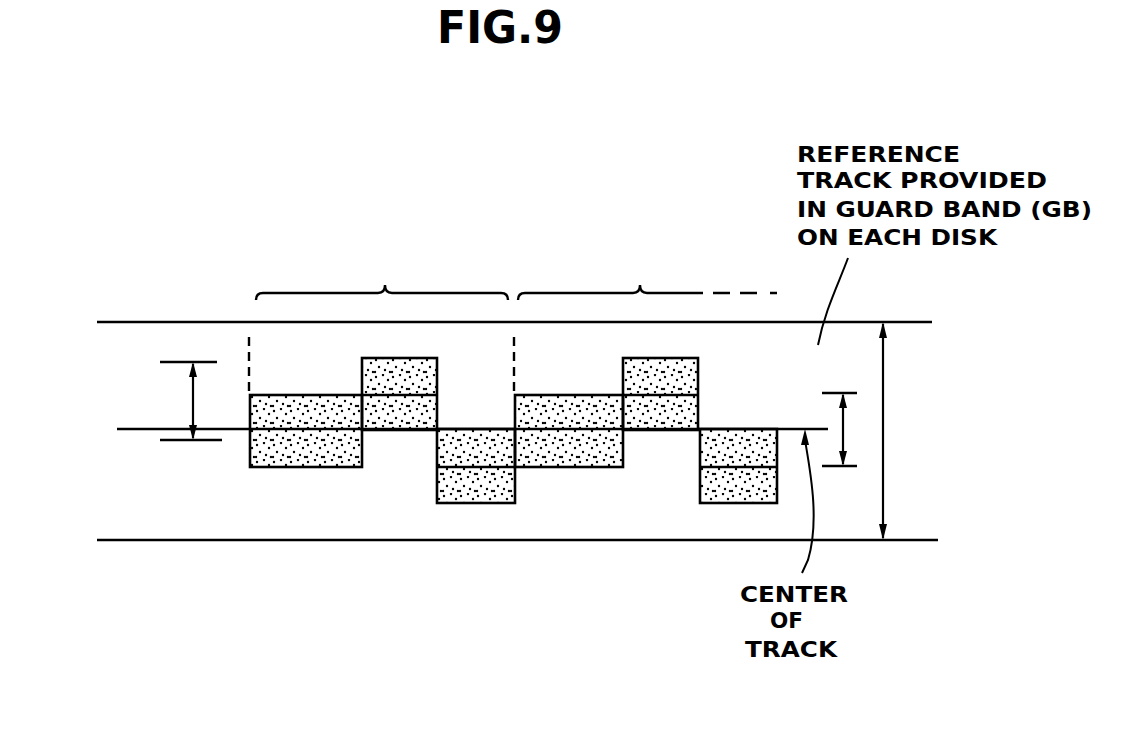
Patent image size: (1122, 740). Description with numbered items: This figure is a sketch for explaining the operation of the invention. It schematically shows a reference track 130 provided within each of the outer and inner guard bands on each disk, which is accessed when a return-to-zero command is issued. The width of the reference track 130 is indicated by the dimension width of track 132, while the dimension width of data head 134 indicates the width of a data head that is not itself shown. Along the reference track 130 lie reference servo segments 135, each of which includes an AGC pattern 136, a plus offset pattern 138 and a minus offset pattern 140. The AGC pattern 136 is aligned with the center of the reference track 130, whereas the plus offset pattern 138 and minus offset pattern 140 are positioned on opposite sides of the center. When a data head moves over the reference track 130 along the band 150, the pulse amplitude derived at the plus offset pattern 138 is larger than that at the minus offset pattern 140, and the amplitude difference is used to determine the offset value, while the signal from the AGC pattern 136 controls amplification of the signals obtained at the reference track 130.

The reference track 130 is at (852, 342).
The width of the reference track 132 is at (883, 400).
The width of a data head 134 is at (847, 433).
The reference servo segment 135 is at (610, 291).
The AGC pattern 136 is at (304, 395).
The plus offset pattern 138 is at (405, 568).
The minus offset pattern 140 is at (480, 430).
The band 150 is at (190, 393).